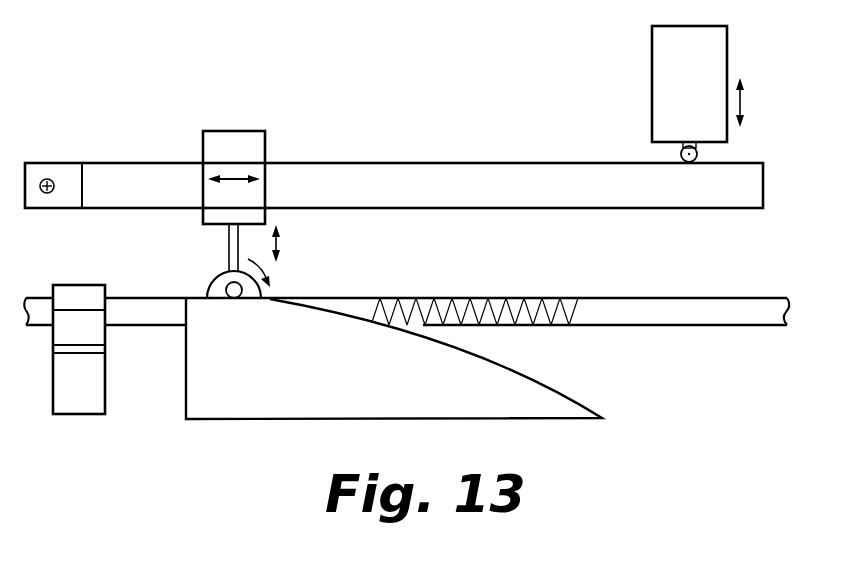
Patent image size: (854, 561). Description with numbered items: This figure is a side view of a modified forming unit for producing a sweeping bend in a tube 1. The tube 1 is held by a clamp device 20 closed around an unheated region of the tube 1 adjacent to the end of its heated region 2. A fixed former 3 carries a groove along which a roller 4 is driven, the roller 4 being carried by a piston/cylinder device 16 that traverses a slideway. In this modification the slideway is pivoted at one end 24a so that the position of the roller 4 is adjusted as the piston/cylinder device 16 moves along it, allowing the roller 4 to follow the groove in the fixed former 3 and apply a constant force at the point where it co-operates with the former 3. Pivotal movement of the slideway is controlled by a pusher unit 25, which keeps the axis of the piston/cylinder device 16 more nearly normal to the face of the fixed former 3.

The tube 1 is at (721, 312).
The heated region 2 is at (470, 304).
The fixed former 3 is at (560, 401).
The roller 4 is at (207, 290).
The piston/cylinder device 16 is at (264, 148).
The clamp device 20 is at (88, 396).
The end of slideway 24a is at (53, 181).
The pusher unit 25 is at (673, 83).